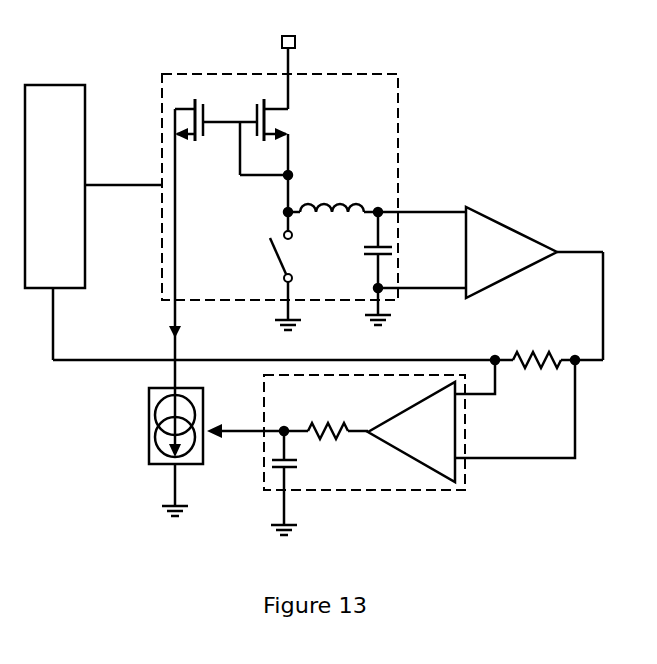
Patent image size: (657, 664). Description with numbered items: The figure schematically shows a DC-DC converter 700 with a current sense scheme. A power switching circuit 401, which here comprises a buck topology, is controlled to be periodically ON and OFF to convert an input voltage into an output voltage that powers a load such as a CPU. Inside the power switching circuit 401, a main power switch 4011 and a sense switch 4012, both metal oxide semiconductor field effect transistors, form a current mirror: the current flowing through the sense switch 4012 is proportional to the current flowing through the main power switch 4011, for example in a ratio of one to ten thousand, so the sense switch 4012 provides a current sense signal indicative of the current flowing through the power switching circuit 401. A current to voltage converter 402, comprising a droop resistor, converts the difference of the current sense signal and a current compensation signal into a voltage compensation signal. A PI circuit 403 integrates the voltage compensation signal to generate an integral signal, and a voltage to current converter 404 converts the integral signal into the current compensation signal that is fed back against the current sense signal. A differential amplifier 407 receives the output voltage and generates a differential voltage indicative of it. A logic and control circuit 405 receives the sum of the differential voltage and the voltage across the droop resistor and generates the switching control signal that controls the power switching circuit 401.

The DC-DC converter 700 is at (557, 57).
The logic and control circuit 405 is at (62, 85).
The power switching circuit 401 is at (280, 202).
The main power switch 4011 is at (290, 118).
The sense switch 4012 is at (184, 143).
The differential amplifier 407 is at (511, 252).
The current to voltage converter 402 is at (527, 350).
The PI circuit 403 is at (428, 506).
The voltage to current converter 404 is at (143, 432).